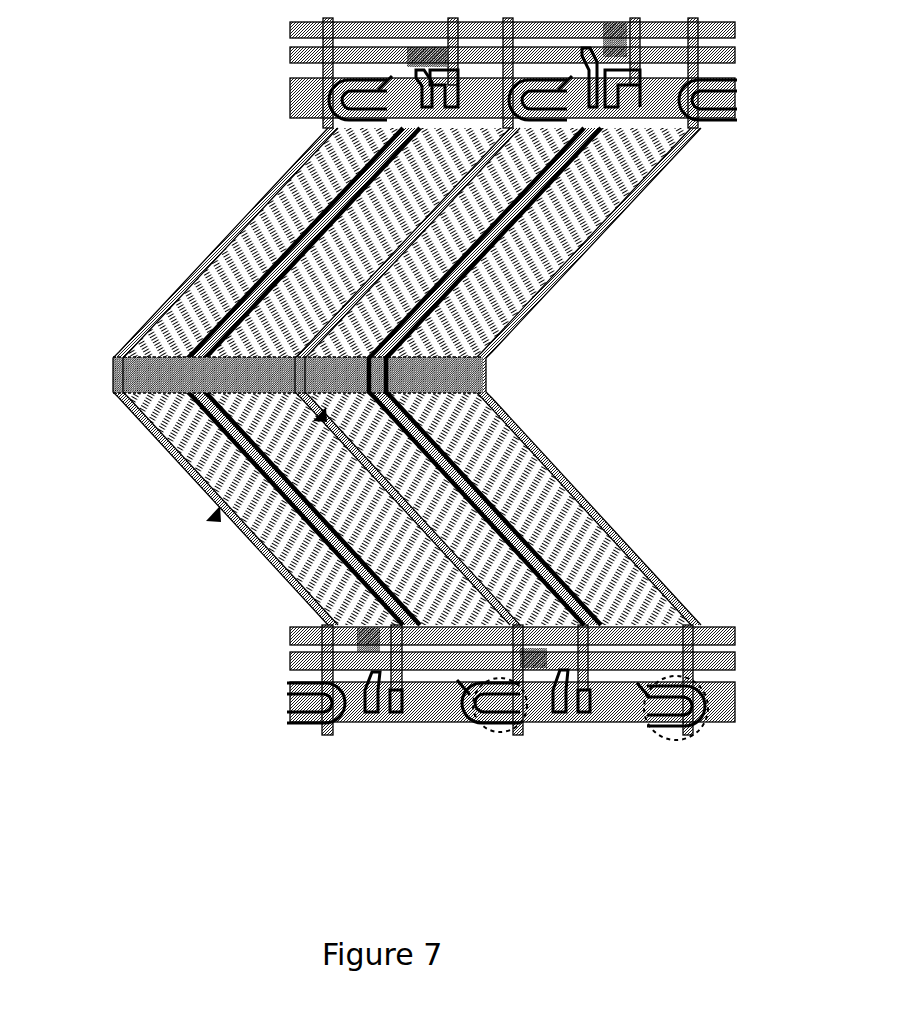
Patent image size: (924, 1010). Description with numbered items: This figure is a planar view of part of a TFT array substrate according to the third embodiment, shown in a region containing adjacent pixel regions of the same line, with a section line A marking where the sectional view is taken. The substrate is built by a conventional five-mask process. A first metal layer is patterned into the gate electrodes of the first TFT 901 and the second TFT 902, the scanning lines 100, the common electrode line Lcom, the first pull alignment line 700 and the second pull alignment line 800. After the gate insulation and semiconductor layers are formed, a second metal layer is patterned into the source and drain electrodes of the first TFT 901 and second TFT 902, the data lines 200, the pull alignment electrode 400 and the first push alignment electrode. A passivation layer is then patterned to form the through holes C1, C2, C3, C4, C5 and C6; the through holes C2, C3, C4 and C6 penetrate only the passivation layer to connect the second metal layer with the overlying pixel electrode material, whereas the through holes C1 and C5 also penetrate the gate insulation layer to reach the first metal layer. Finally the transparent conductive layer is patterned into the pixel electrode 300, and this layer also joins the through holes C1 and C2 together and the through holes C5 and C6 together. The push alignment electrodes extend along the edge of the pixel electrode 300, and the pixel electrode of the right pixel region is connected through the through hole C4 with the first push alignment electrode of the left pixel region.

The scanning lines 100 is at (740, 712).
The data lines 200 is at (262, 555).
The pixel electrode 300 is at (246, 212).
The pull alignment electrode 400 is at (200, 285).
The first pull alignment line 700 is at (735, 668).
The second pull alignment line 800 is at (735, 632).
The first TFT 901 is at (515, 738).
The second TFT 902 is at (378, 728).
The common electrode line Lcom is at (135, 350).
The section line A-A' A is at (251, 471).
The through hole C1 is at (290, 690).
The through hole C2 is at (330, 738).
The through hole C3 is at (462, 735).
The through hole C4 is at (568, 740).
The through hole C5 is at (650, 590).
The through hole C6 is at (665, 612).